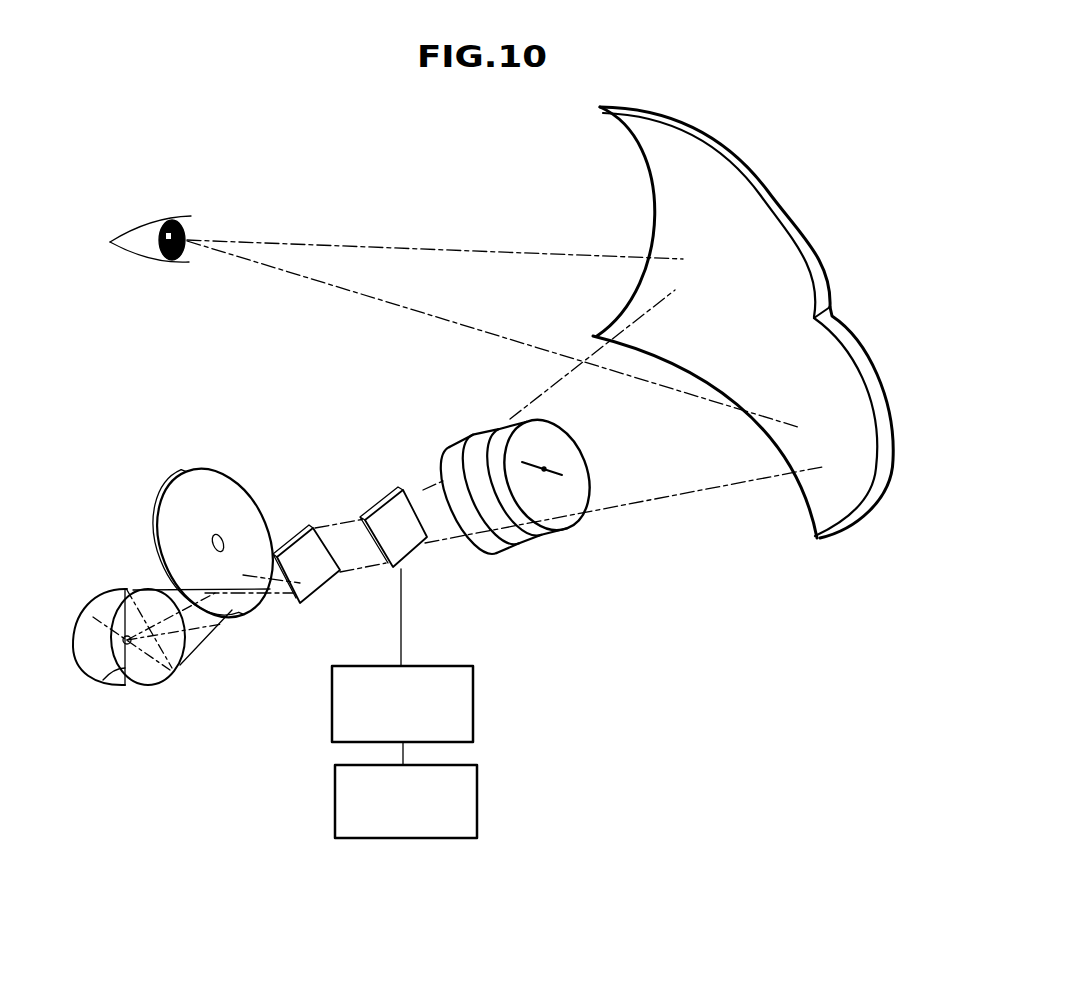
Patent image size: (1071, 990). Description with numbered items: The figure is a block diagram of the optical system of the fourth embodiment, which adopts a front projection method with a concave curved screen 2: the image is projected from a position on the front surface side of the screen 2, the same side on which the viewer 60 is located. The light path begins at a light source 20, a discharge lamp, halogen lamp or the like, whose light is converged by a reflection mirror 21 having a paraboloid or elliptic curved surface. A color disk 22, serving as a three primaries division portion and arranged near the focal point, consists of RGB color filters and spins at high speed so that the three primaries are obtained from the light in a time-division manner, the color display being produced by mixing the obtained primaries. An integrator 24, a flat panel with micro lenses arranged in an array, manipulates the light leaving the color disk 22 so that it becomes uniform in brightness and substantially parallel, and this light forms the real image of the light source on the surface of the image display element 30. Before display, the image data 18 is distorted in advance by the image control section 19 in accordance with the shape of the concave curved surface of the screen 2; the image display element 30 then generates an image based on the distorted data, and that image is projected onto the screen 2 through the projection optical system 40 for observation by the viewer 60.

The screen 2 is at (752, 168).
The viewer 60 is at (143, 227).
The projection optical system 40 is at (500, 550).
The image display element 30 is at (385, 513).
The integrator 24 is at (303, 545).
The color disk 22 is at (183, 497).
The light source 20 is at (110, 595).
The reflection mirror 21 is at (105, 682).
The image control section 19 is at (332, 704).
The image data 18 is at (335, 792).